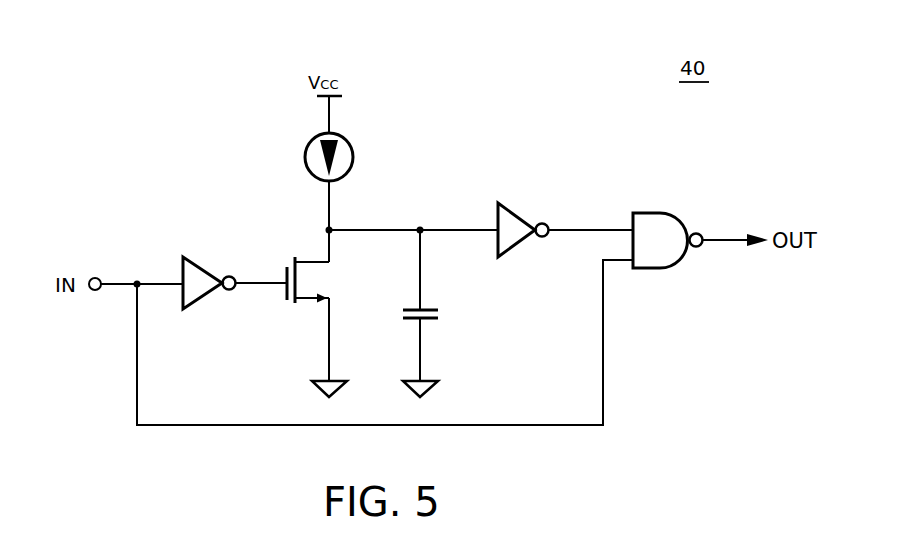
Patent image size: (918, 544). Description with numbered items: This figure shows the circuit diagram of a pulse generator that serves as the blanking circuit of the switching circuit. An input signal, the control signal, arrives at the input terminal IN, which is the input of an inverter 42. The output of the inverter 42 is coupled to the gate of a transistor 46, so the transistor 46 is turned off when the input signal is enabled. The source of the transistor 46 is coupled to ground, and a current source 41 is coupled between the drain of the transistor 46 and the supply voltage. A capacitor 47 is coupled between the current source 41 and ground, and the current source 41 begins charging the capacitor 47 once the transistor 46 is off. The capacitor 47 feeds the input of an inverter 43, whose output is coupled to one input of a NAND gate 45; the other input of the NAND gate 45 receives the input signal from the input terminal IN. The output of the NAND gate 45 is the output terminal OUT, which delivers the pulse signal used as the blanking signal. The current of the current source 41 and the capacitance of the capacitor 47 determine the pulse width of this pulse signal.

The current source 41 is at (356, 158).
The inverter 42 is at (203, 262).
The inverter 43 is at (520, 213).
The NAND gate 45 is at (653, 208).
The transistor 46 is at (290, 308).
The capacitor 47 is at (442, 313).